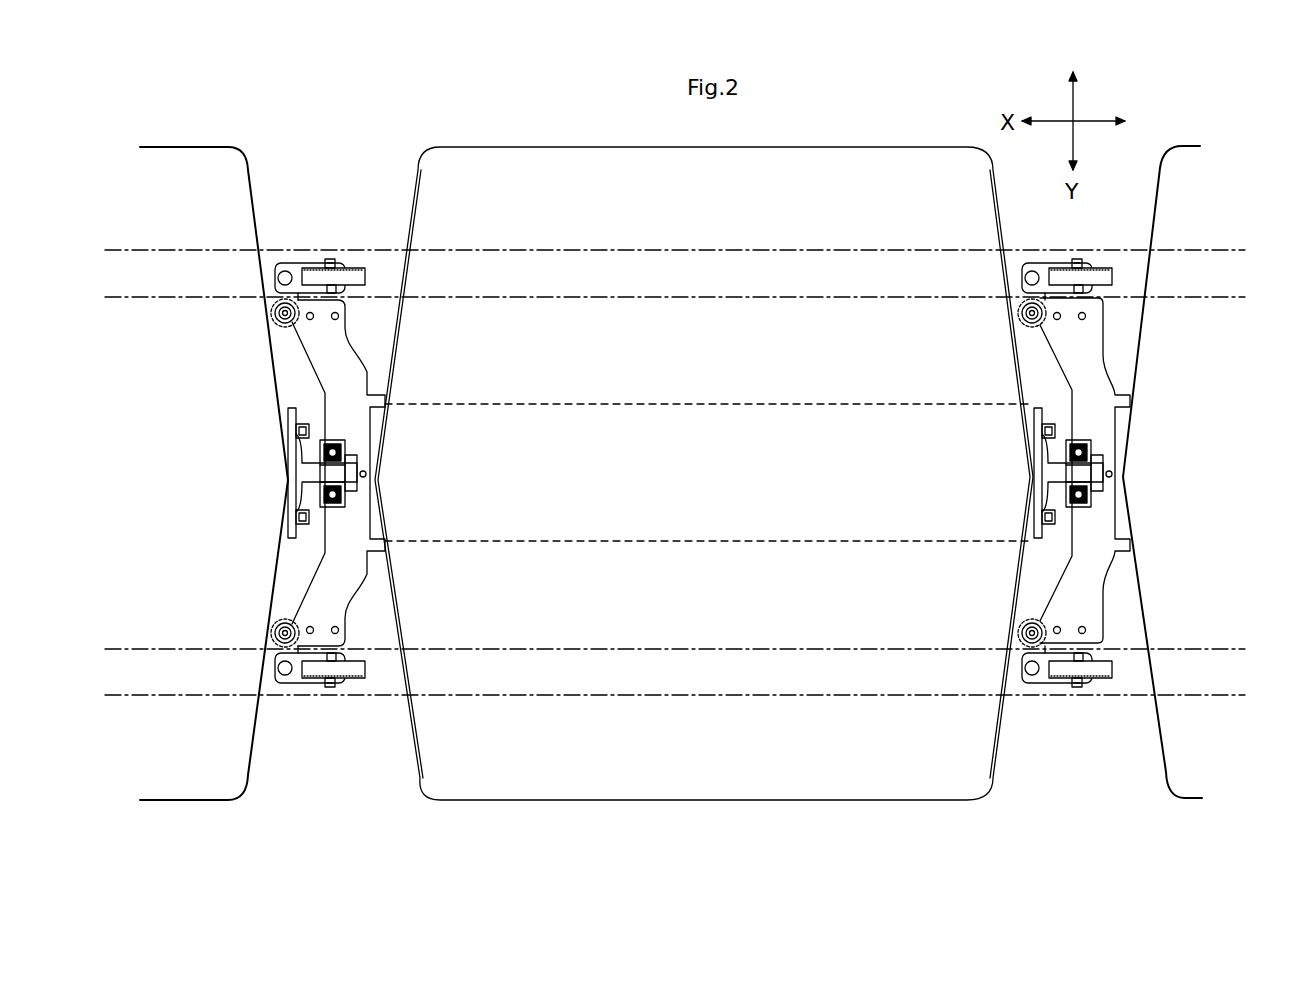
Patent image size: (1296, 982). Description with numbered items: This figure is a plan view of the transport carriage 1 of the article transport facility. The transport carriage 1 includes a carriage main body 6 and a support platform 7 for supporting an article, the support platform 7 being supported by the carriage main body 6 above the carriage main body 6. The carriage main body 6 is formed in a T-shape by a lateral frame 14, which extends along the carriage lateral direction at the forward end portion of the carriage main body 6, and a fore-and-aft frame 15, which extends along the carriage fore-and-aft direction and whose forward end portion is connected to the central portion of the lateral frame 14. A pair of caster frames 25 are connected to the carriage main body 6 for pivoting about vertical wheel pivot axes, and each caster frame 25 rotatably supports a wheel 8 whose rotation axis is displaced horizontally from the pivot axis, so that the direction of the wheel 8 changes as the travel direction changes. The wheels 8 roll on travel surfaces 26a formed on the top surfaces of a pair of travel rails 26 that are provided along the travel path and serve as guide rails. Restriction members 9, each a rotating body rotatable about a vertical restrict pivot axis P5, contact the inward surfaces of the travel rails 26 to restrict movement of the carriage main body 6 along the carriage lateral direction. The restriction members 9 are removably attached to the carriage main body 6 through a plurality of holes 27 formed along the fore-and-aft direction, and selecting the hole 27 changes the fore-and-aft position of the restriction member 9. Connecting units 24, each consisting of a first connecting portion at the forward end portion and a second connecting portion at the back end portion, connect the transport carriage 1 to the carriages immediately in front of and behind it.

The transport carriage 1 is at (192, 147).
The carriage main body 6 is at (621, 403).
The support platform 7 is at (420, 790).
The wheel 8 is at (318, 268).
The restriction member 9 is at (270, 322).
The lateral frame 14 is at (352, 380).
The fore-and-aft frame 15 is at (705, 403).
The connecting unit 24 is at (347, 445).
The caster frame 25 is at (302, 268).
The travel rail 26 is at (535, 250).
The travel surface 26a is at (153, 270).
The hole 27 is at (340, 320).
The restrict pivot axis P5 is at (268, 310).